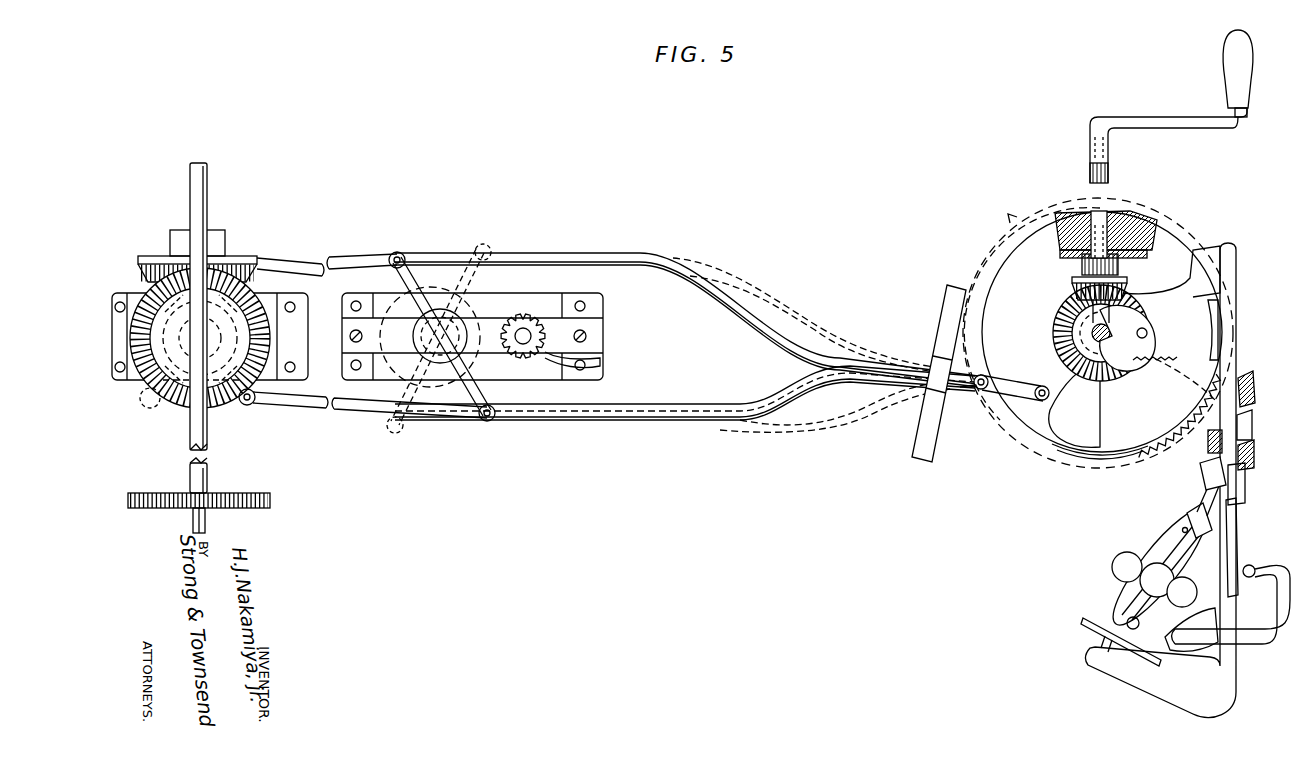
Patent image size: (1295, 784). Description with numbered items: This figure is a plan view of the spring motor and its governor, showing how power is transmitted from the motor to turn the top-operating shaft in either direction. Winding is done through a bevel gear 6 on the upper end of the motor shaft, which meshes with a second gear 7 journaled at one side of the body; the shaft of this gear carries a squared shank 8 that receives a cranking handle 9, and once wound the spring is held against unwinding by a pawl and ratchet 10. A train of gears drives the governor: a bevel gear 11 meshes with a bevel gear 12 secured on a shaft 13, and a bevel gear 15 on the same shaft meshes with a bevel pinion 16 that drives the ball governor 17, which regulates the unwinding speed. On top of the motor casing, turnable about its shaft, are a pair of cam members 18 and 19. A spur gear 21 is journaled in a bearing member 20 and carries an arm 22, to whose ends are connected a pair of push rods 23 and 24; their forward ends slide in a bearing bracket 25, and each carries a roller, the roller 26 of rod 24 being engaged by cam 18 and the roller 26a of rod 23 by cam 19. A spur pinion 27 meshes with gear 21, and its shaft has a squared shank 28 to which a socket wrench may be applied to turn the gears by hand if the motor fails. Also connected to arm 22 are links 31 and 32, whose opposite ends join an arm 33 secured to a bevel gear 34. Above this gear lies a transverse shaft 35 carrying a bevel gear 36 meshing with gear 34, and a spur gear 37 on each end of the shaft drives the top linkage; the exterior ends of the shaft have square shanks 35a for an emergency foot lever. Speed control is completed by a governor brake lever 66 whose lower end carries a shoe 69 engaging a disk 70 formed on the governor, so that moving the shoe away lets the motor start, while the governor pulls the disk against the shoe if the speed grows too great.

The bevel gear 6 is at (1053, 312).
The second gear 7 is at (1127, 301).
The squared shank 8 is at (1098, 227).
The cranking handle 9 is at (1178, 123).
The pawl and ratchet 10 is at (1116, 322).
The bevel gear 11 is at (1047, 457).
The bevel gear 12 is at (1258, 415).
The shaft 13 is at (1170, 388).
The bevel gear 15 is at (1244, 382).
The bevel pinion 16 is at (1250, 454).
The ball governor 17 is at (1127, 561).
The cam member 18 is at (1087, 422).
The cam member 19 is at (1137, 264).
The bearing member 20 is at (540, 374).
The spur gear 21 is at (488, 306).
The arm 22 is at (405, 278).
The push rod 23 is at (624, 237).
The push rod 24 is at (693, 414).
The bearing bracket 25 is at (924, 433).
The roller 26 is at (1042, 386).
The roller 26a is at (995, 396).
The spur pinion 27 is at (553, 278).
The squared shank 28 is at (558, 345).
The link 31 is at (312, 409).
The link 32 is at (304, 249).
The arm 33 is at (245, 406).
The bevel gear 34 is at (186, 405).
The shaft 35 is at (199, 200).
The square shank 35a is at (209, 527).
The bevel gear 36 is at (216, 262).
The spur gear 37 is at (272, 500).
The governor brake lever 66 is at (1267, 615).
The shoe 69 is at (1120, 617).
The disk 70 is at (1096, 632).